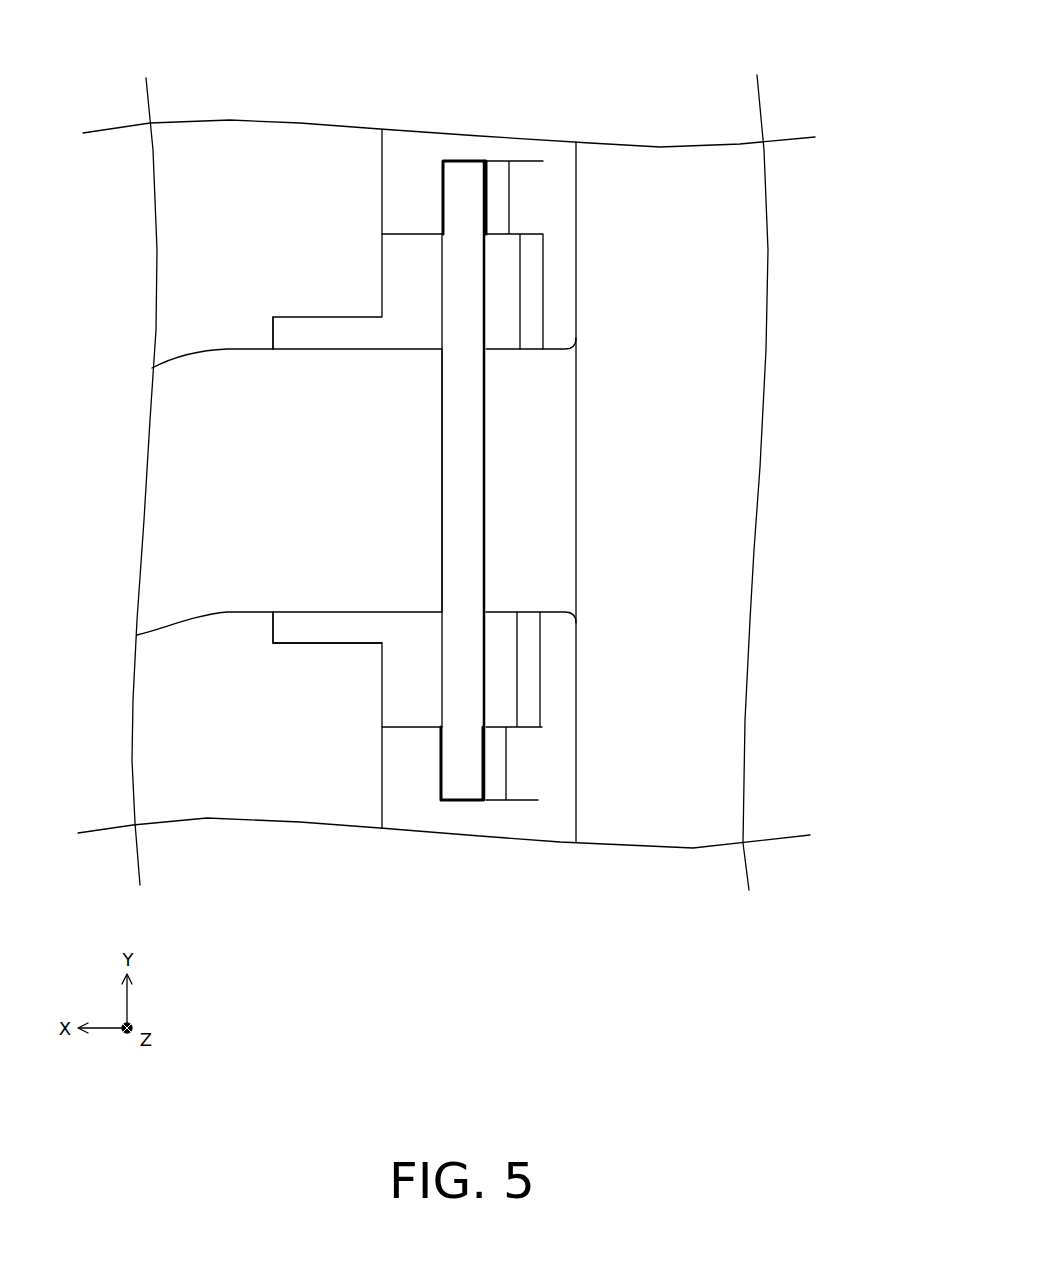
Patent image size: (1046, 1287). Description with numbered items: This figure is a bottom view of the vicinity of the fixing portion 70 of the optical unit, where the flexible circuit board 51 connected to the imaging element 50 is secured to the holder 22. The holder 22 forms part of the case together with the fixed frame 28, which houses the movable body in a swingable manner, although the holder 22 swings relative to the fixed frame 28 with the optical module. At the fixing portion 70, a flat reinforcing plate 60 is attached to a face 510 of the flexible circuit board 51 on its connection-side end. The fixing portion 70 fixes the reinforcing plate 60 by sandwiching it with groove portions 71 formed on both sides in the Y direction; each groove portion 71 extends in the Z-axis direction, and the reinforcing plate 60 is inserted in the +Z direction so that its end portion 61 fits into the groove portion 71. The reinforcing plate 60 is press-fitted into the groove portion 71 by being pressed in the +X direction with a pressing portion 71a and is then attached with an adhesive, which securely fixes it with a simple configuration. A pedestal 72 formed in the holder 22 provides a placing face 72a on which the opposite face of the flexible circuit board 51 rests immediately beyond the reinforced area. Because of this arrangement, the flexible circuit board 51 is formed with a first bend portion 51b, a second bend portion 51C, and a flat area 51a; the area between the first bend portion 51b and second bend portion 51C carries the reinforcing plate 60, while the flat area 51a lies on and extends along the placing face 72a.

The fixing portion 70 is at (677, 88).
The reinforcing plate 60 is at (452, 440).
The end portion 61 is at (457, 210).
The groove portion 71 is at (463, 170).
The pressing portion 71a is at (481, 202).
The face 510 is at (480, 378).
The second bend portion 51C is at (425, 490).
The first bend portion 51b is at (503, 530).
The flat area 51a is at (267, 415).
The flexible circuit board 51 is at (187, 487).
The pedestal 72 is at (267, 628).
The placing face 72a is at (345, 628).
The fixed frame 28 is at (222, 780).
The holder 22 is at (555, 827).
The imaging element 50 is at (638, 750).